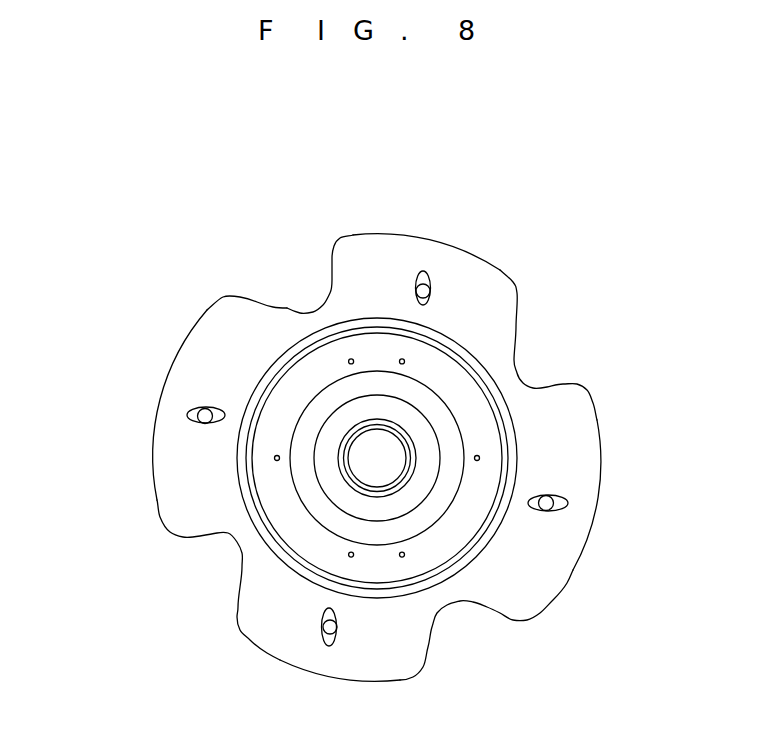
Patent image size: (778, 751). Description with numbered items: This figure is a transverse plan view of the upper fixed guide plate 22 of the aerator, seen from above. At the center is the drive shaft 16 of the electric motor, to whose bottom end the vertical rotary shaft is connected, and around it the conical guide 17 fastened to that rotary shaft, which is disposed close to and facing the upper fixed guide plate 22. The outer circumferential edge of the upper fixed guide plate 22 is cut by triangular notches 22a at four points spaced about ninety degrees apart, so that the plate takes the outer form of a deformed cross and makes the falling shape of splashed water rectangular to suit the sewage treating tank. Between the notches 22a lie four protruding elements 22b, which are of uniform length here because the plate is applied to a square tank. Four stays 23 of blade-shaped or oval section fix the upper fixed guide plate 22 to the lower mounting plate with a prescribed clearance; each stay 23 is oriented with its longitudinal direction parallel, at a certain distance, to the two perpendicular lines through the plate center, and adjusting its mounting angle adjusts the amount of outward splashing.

The drive shaft 16 is at (403, 443).
The conical guide 17 is at (427, 483).
The upper fixed guide plate 22 is at (371, 444).
The notch 22a is at (288, 307).
The protruding element 22b is at (483, 272).
The stay 23 is at (425, 280).